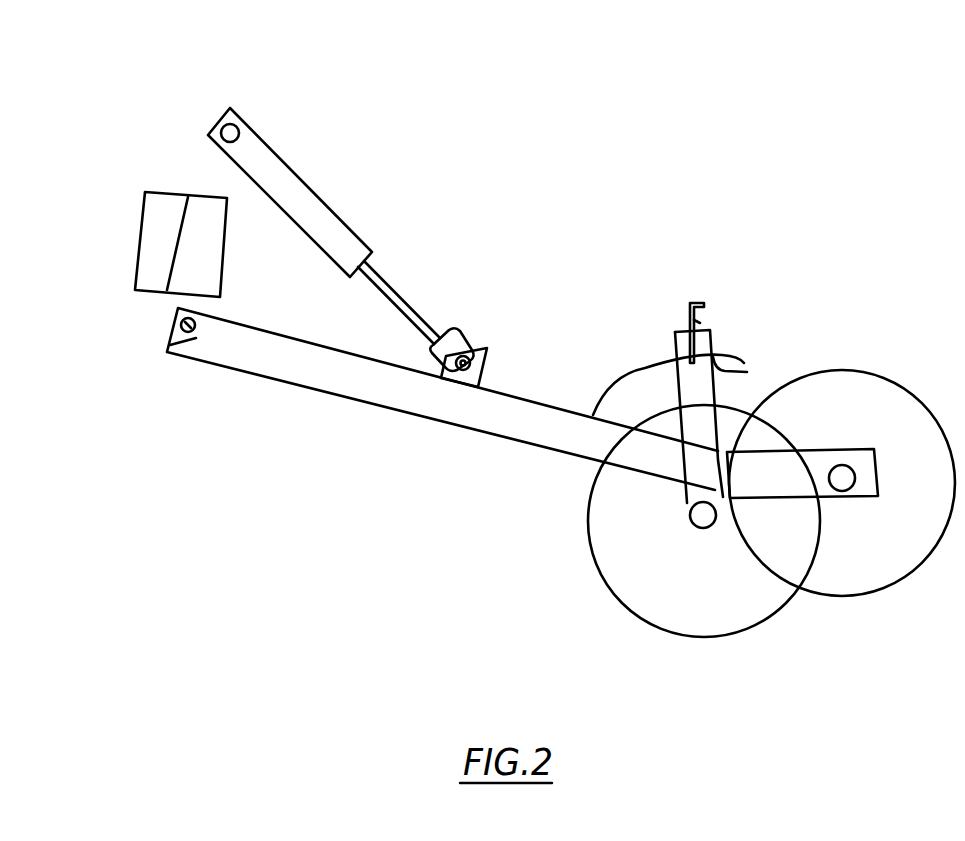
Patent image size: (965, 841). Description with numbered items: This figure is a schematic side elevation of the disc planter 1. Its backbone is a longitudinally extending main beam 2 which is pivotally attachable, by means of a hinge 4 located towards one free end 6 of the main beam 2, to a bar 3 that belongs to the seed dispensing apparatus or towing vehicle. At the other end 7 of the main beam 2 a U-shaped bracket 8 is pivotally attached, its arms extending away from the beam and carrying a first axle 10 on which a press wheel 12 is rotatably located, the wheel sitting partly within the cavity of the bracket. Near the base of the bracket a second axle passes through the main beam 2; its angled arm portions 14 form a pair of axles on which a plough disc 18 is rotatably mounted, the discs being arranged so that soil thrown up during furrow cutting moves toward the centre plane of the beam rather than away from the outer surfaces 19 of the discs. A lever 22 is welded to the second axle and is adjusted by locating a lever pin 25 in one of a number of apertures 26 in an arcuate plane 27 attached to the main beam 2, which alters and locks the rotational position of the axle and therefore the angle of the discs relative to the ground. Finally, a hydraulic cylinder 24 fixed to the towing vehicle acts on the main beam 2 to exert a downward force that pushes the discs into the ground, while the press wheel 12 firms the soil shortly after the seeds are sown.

The disc planter 1 is at (535, 375).
The main beam 2 is at (333, 390).
The bar 3 is at (172, 191).
The hinge 4 is at (196, 328).
The free end 6 is at (180, 328).
The other end 7 is at (723, 480).
The U-shaped bracket 8 is at (812, 450).
The first axle 10 is at (845, 483).
The press wheel 12 is at (880, 375).
The arm portions 14 is at (707, 527).
The plough disc 18 is at (657, 622).
The outer surfaces 19 is at (677, 609).
The lever 22 is at (697, 302).
The hydraulic cylinder 24 is at (323, 193).
The lever pin 25 is at (700, 323).
The apertures 26 is at (750, 373).
The arcuate plane 27 is at (635, 367).